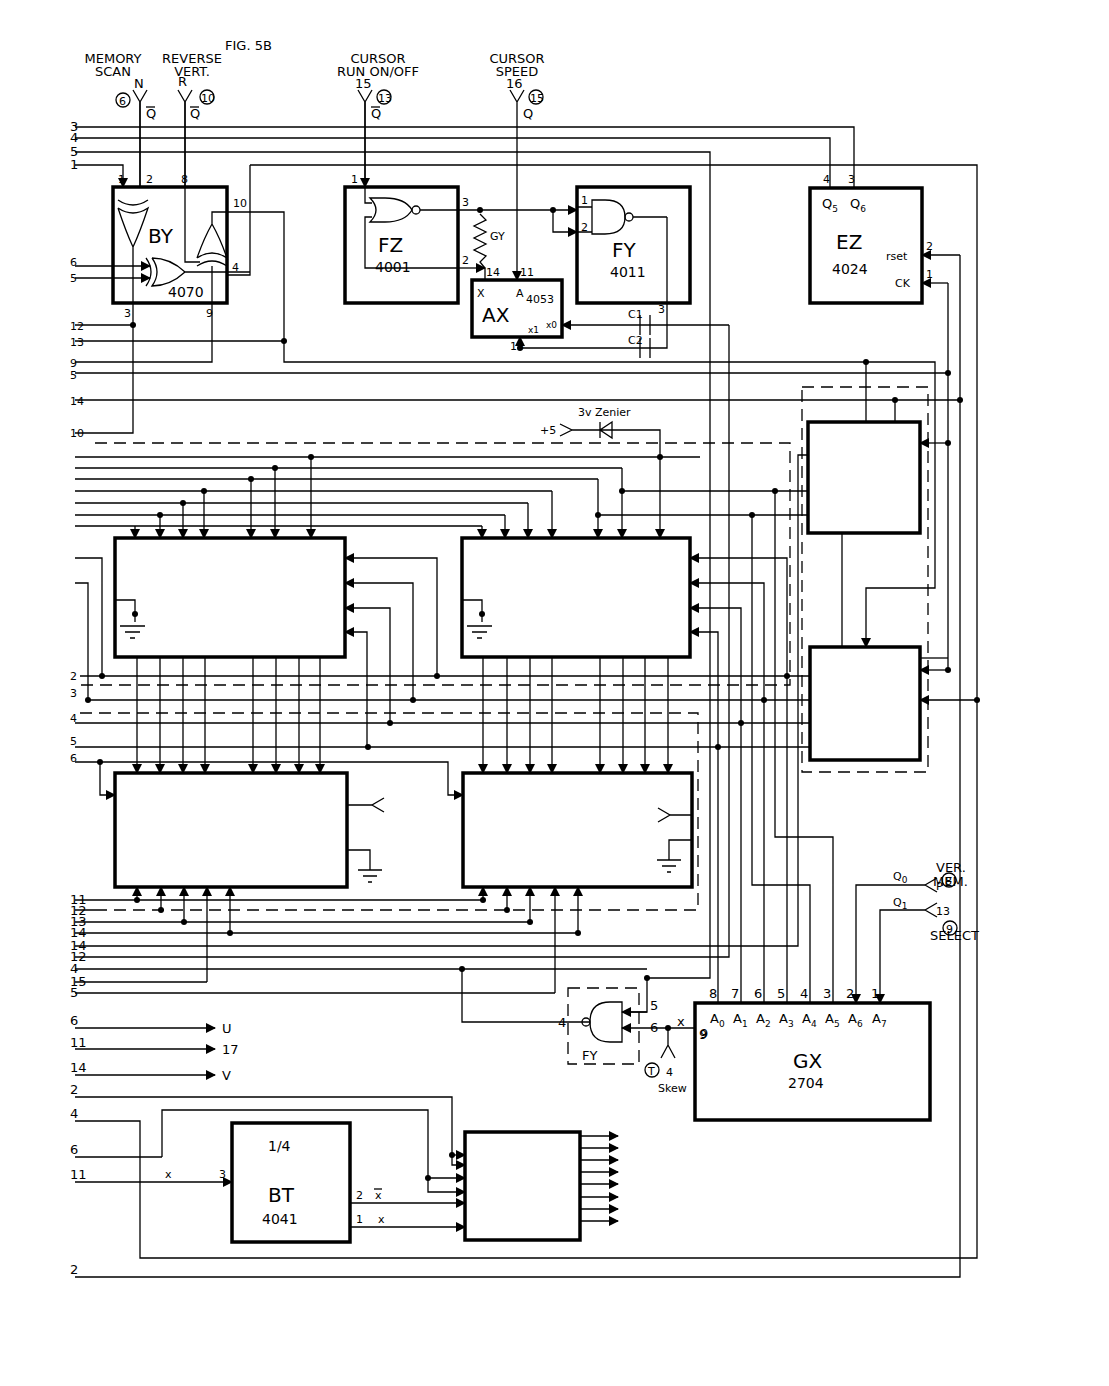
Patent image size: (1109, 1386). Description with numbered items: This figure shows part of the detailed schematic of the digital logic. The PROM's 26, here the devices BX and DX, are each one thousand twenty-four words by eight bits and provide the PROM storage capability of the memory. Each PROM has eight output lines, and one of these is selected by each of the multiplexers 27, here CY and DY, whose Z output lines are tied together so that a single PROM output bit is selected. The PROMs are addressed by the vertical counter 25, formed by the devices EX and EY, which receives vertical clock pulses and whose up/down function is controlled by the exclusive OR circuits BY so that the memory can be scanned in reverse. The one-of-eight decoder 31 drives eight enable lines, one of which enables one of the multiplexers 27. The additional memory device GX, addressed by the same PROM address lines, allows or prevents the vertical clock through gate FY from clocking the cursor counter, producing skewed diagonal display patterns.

The vertical counter 25 is at (888, 782).
The PROM's 26 is at (397, 443).
The multiplexers 27 is at (618, 905).
The decoder 31 is at (515, 1132).